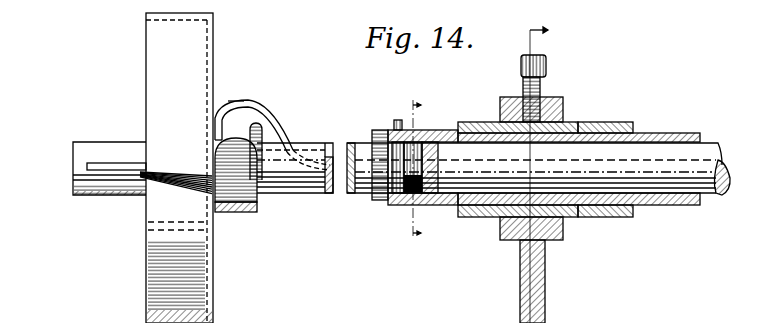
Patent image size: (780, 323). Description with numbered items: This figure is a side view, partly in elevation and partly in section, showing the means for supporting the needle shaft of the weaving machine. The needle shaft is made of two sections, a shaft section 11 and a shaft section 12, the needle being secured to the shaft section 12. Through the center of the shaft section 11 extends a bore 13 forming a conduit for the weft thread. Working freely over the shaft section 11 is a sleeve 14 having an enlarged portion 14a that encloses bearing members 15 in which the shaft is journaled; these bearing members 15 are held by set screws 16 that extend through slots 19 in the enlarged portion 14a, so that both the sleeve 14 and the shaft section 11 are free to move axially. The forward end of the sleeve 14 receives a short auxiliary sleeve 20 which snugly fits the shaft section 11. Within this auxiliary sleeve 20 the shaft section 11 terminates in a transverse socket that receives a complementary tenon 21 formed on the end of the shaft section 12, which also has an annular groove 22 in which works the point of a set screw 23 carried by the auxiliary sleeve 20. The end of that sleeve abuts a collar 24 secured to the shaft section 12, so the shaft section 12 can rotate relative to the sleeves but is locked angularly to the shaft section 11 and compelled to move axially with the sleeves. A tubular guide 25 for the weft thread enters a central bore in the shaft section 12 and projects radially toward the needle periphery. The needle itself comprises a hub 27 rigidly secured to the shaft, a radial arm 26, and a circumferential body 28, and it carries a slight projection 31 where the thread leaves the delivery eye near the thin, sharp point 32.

The needle shaft section 11 is at (709, 146).
The needle shaft section 12 is at (308, 194).
The bore 13 is at (729, 171).
The sleeve 14 is at (676, 133).
The enlarged portion of the sleeve 14a is at (616, 123).
The bearing members 15 is at (483, 224).
The set screws 16 is at (541, 86).
The slots 19 is at (566, 128).
The auxiliary sleeve 20 is at (441, 130).
The tenon 21 is at (423, 140).
The annular groove 22 is at (399, 198).
The set screw 23 is at (397, 128).
The collar 24 is at (374, 200).
The tubular guide 25 is at (276, 119).
The radial arm 26 is at (229, 103).
The hub 27 is at (231, 207).
The needle body 28 is at (157, 88).
The projection 31 is at (131, 193).
The needle point 32 is at (183, 196).